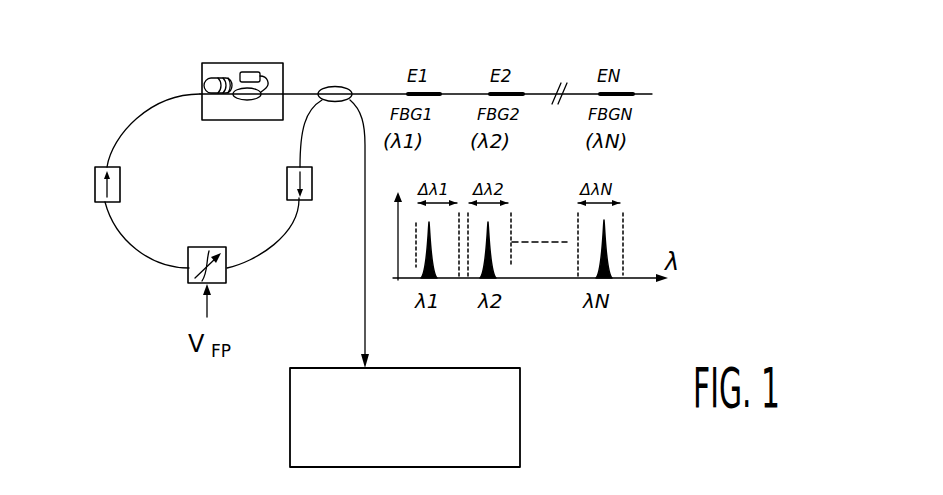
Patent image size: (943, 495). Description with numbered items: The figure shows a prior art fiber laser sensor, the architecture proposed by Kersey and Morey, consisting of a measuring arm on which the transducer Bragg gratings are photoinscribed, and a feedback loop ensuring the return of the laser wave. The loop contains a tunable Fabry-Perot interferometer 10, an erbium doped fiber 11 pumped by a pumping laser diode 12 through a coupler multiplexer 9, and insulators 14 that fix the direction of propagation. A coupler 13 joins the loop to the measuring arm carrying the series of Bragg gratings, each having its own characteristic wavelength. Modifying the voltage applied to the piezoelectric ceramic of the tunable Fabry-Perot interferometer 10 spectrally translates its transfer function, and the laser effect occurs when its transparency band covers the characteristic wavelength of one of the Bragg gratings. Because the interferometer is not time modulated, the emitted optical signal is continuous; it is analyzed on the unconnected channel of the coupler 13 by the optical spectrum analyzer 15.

The coupler multiplexer 9 is at (245, 101).
The tunable Fabry-Perot interferometer 10 is at (189, 272).
The erbium doped fiber 11 is at (203, 80).
The pumping laser diode 12 is at (251, 72).
The coupler 13 is at (334, 87).
The insulators 14 is at (103, 203).
The optical spectrum analyzer 15 is at (520, 401).